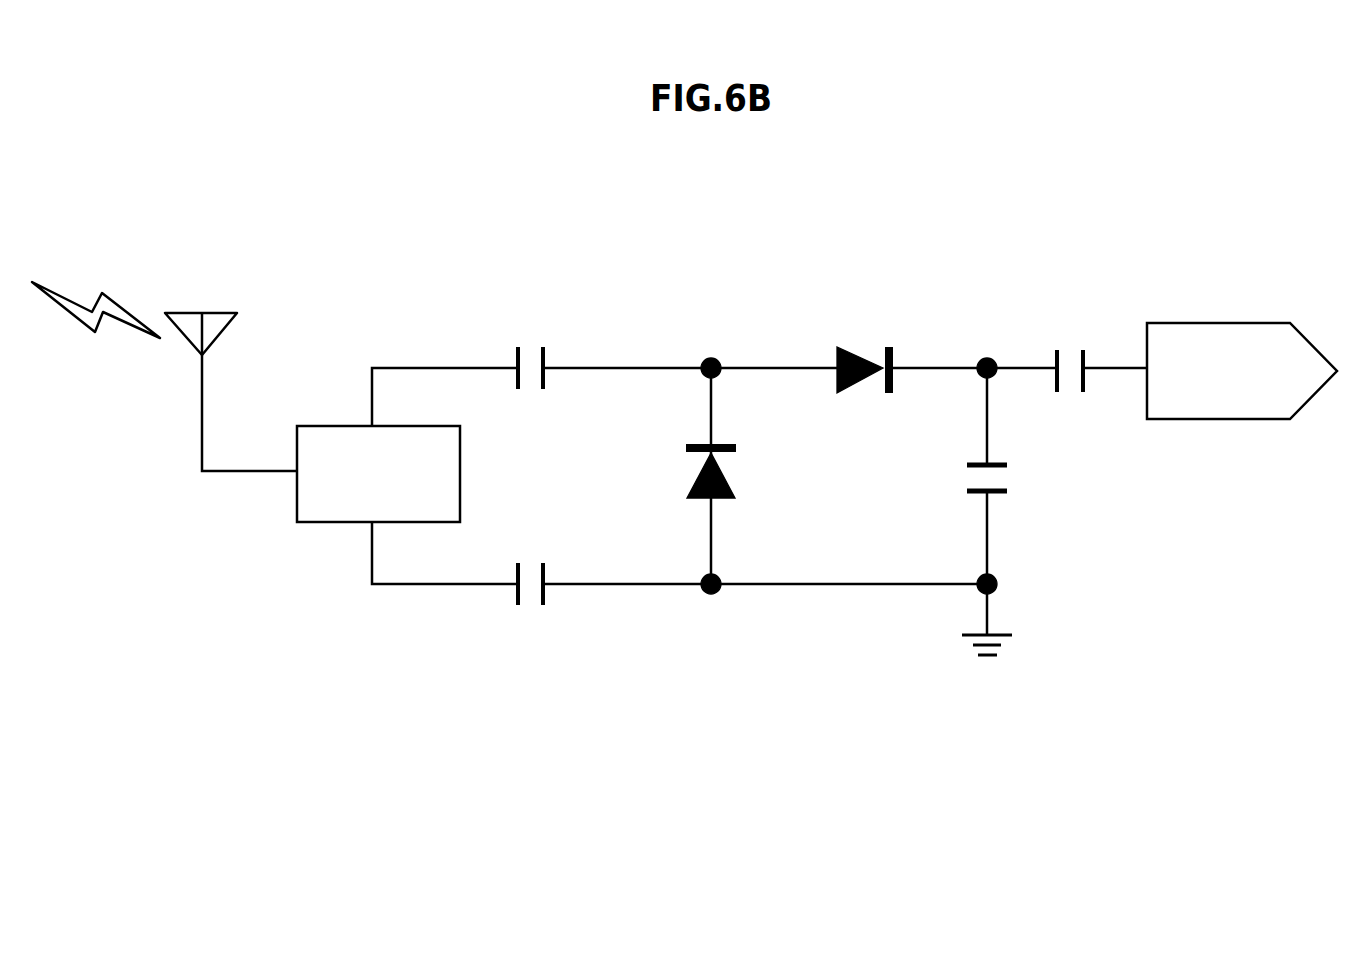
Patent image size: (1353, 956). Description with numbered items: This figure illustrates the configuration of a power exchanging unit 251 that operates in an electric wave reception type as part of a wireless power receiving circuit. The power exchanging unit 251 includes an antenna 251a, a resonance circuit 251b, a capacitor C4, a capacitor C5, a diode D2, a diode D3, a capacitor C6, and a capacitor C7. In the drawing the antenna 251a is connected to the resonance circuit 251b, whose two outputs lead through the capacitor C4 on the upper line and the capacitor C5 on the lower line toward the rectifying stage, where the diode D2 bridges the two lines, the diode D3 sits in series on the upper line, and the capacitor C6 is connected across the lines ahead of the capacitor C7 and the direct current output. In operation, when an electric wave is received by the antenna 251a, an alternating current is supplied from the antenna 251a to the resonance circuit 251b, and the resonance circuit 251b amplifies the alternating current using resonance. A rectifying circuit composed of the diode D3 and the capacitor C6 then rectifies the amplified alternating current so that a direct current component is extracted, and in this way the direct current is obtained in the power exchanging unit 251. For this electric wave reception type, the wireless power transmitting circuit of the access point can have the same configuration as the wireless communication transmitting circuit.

The power exchanging unit 251 is at (1060, 210).
The antenna 251a is at (217, 312).
The resonance circuit 251b is at (297, 443).
The capacitor C4 is at (518, 352).
The capacitor C5 is at (516, 592).
The capacitor C6 is at (1002, 462).
The capacitor C7 is at (1055, 356).
The diode D2 is at (700, 472).
The diode D3 is at (857, 350).